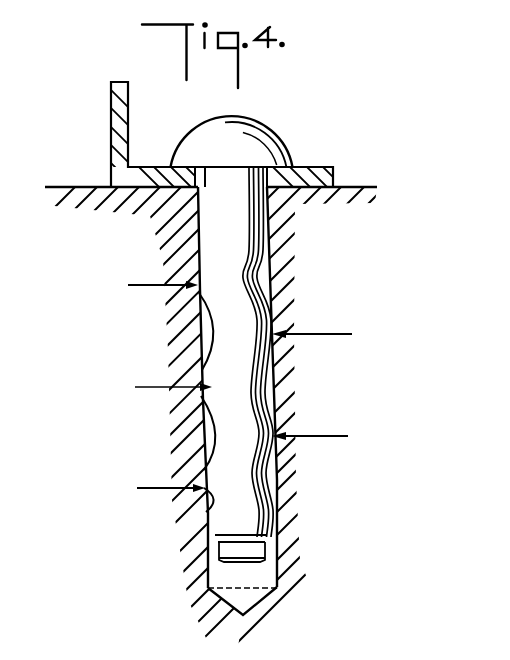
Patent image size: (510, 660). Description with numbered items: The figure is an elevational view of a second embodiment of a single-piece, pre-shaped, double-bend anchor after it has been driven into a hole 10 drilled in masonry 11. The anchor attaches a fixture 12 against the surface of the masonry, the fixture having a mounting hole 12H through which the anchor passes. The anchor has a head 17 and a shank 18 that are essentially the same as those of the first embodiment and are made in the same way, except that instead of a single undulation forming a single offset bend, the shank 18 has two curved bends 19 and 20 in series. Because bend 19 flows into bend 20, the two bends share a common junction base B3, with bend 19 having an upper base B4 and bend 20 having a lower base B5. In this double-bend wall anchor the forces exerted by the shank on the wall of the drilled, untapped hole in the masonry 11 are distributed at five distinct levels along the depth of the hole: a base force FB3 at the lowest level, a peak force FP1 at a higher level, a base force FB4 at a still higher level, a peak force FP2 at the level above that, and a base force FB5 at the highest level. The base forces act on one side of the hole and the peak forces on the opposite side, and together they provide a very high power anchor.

The hole 10 is at (258, 572).
The masonry 11 is at (73, 187).
The fixture 12 is at (122, 99).
The mounting hole 12H is at (278, 165).
The head 17 is at (268, 128).
The shank 18 is at (222, 237).
The curved bend 19 is at (260, 352).
The curved bend 20 is at (260, 452).
The common junction base B3 is at (200, 397).
The upper base B4 is at (202, 297).
The lower base B5 is at (206, 500).
The base force FB3 is at (149, 493).
The base force FB4 is at (150, 390).
The base force FB5 is at (137, 286).
The peak force FP1 is at (334, 436).
The peak force FP2 is at (334, 336).